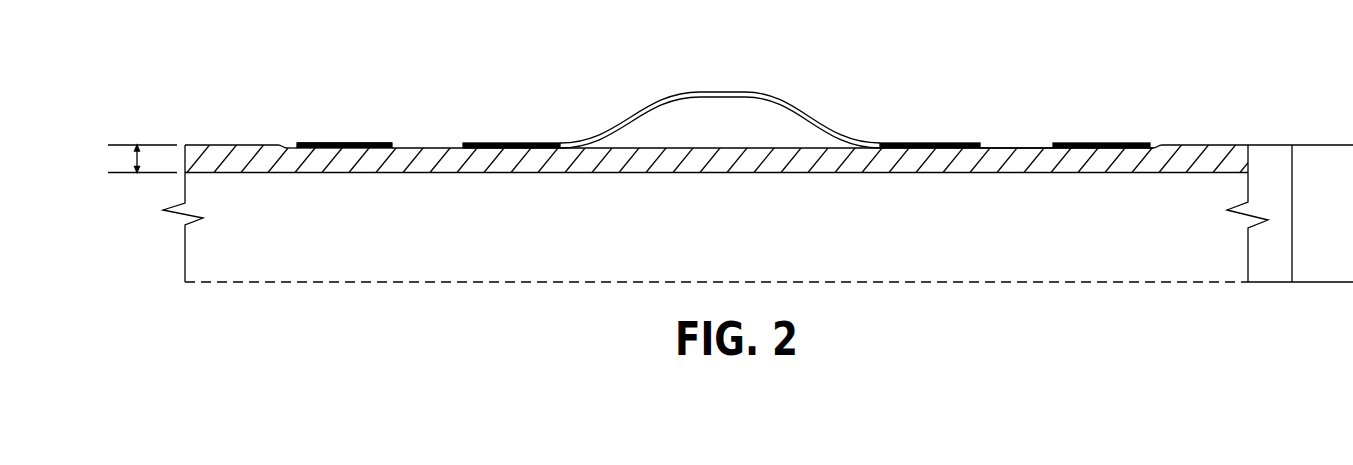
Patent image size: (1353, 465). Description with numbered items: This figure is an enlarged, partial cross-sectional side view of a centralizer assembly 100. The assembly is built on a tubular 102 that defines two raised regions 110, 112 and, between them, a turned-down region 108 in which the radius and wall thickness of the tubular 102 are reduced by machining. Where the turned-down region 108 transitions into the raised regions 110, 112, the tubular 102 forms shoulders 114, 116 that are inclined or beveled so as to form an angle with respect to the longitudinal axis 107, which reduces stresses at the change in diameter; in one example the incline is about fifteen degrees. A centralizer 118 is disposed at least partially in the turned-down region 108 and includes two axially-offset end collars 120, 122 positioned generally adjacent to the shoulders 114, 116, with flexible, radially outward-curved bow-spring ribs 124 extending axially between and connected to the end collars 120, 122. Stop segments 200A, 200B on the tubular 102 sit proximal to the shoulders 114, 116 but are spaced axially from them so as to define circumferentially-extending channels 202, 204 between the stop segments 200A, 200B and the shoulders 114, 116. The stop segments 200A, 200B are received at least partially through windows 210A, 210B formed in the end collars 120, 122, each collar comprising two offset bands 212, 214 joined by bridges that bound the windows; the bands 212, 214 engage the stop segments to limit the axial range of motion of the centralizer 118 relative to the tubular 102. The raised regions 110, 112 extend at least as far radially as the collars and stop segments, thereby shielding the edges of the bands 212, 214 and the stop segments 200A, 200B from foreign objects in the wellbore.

The centralizer assembly 100 is at (1126, 29).
The tubular 102 is at (263, 163).
The longitudinal axis 107 is at (1085, 280).
The turned-down region 108 is at (693, 144).
The raised region 110 is at (217, 145).
The raised region 112 is at (1227, 145).
The shoulder 114 is at (280, 147).
The shoulder 116 is at (1160, 147).
The centralizer 118 is at (841, 111).
The end collar 120 is at (513, 145).
The end collar 122 is at (963, 147).
The ribs 124 is at (697, 92).
The stop segments 200A is at (370, 147).
The stop segments 200B is at (1085, 145).
The circumferentially-extending channel 202 is at (283, 147).
The circumferentially-extending channel 204 is at (1152, 147).
The windows 210A is at (407, 132).
The windows 210B is at (1014, 137).
The band 212 is at (317, 145).
The band 214 is at (480, 143).